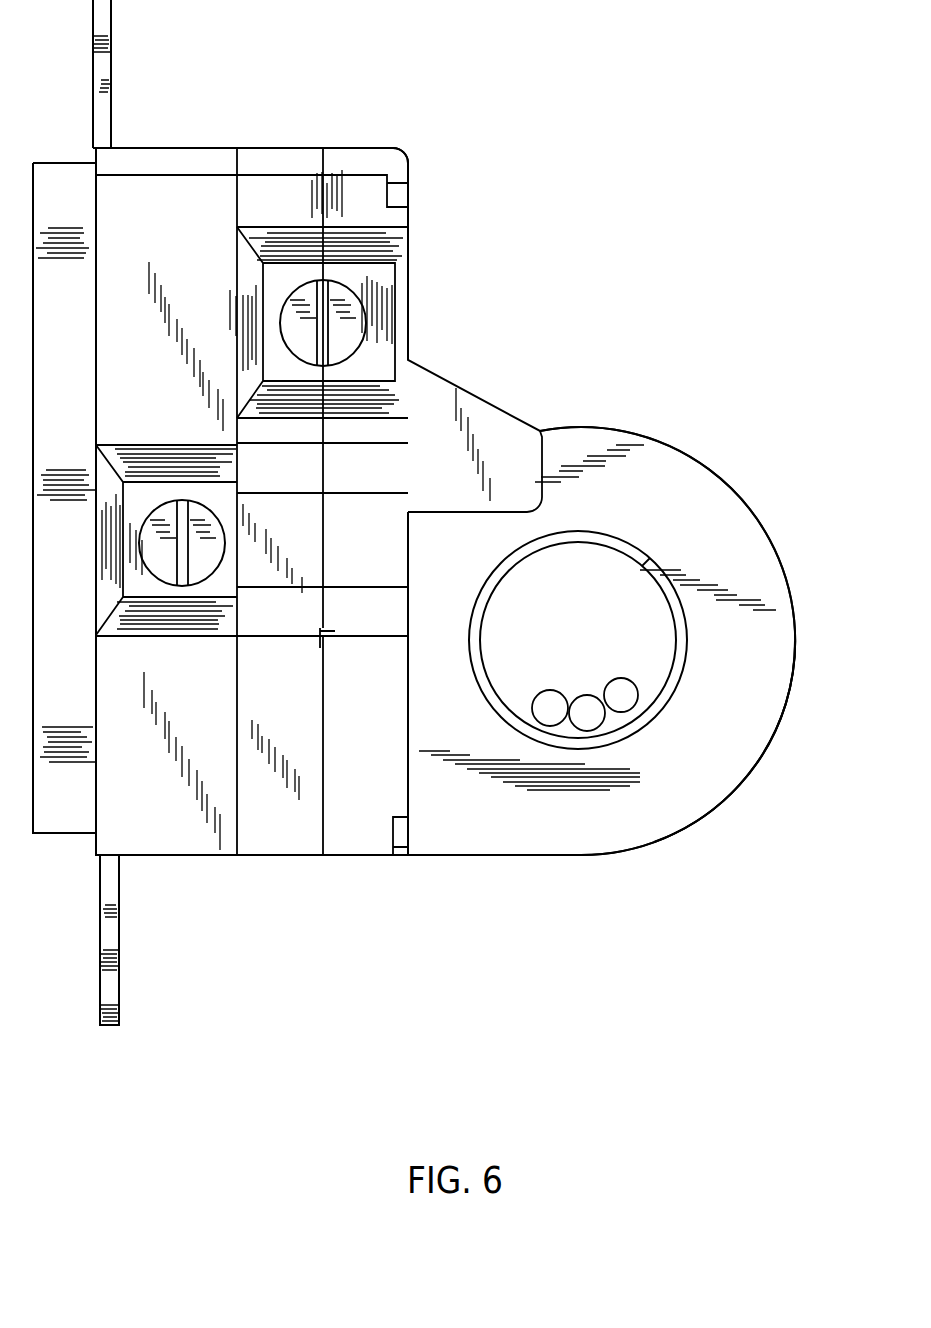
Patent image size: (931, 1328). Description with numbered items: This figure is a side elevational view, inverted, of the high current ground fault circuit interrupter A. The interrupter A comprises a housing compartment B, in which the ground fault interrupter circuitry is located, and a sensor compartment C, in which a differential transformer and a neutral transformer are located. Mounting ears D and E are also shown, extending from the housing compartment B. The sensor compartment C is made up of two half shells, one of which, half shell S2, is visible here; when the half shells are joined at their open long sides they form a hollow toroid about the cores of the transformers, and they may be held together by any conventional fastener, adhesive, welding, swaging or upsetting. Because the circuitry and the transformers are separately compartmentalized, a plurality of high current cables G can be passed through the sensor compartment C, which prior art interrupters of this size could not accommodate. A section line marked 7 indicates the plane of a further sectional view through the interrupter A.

The high current ground fault circuit interrupter A is at (488, 1006).
The housing compartment B is at (256, 148).
The sensor compartment C is at (748, 556).
The mounting ear D is at (100, 18).
The mounting ear E is at (105, 985).
The high current cables G is at (625, 695).
The half shell S2 is at (748, 733).
The section line 7- 7 is at (852, 648).